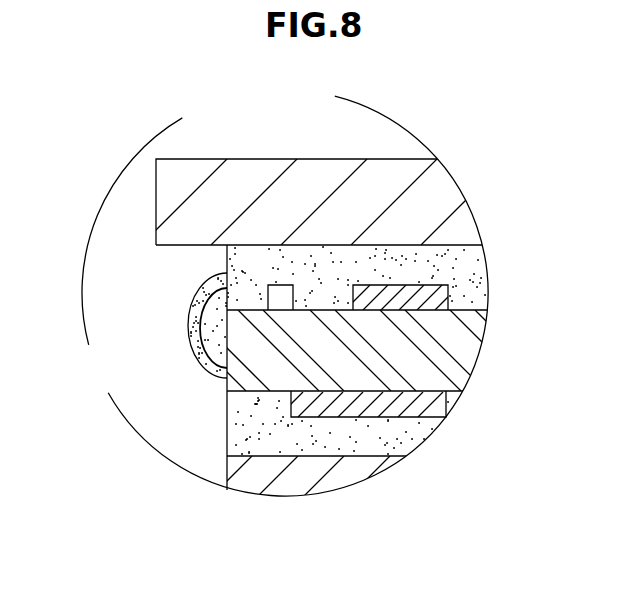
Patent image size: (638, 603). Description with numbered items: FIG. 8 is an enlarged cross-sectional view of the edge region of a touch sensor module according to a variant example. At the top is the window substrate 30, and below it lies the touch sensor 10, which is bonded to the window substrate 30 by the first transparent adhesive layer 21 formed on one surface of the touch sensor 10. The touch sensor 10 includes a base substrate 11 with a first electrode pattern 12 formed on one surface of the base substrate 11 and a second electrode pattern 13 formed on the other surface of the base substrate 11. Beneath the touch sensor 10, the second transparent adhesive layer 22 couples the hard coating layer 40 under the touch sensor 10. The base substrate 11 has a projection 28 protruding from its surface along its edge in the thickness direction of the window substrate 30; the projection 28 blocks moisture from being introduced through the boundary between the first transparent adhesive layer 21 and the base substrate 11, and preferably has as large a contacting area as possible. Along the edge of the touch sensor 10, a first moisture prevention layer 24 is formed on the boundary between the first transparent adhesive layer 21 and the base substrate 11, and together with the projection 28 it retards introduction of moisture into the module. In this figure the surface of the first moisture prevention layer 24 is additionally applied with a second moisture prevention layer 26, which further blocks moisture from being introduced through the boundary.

The touch sensor 10 is at (384, 354).
The base substrate 11 is at (458, 353).
The first electrode pattern 12 is at (427, 303).
The second electrode pattern 13 is at (412, 407).
The first transparent adhesive layer 21 is at (465, 265).
The second transparent adhesive layer 22 is at (402, 438).
The first moisture prevention layer 24 is at (213, 314).
The second moisture prevention layer 26 is at (199, 345).
The projection 28 is at (283, 296).
The window substrate 30 is at (428, 208).
The hard coating layer 40 is at (295, 483).